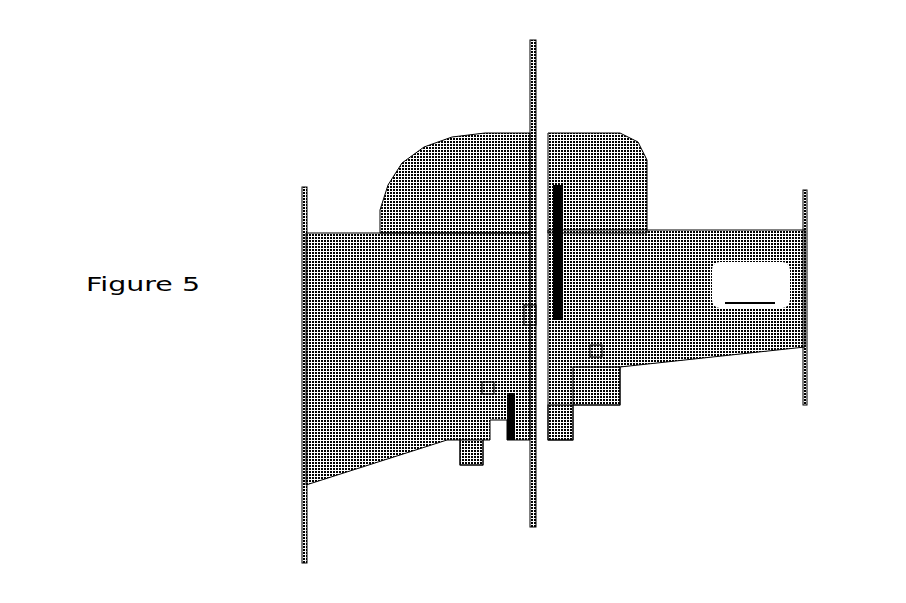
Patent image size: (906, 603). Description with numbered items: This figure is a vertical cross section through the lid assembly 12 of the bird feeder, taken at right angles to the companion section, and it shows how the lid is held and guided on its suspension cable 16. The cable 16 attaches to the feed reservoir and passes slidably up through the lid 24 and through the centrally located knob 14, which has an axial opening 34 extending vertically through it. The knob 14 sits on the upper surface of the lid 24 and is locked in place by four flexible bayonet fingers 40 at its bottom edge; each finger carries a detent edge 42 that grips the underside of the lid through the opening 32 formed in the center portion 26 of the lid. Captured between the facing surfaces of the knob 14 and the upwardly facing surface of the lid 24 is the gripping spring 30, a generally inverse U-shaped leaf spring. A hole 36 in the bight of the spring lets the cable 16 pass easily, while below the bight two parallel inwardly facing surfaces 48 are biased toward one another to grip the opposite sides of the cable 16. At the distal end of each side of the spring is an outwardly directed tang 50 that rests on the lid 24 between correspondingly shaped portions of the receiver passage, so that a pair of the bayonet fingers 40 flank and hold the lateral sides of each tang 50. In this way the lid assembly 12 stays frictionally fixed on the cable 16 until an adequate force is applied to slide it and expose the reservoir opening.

The lid assembly 12 is at (402, 120).
The knob 14 is at (642, 173).
The cable 16 is at (528, 75).
The lid 24 is at (750, 290).
The center portion 26 is at (492, 412).
The gripping spring 30 is at (522, 227).
The opening 32 is at (588, 375).
The axial opening 34 is at (553, 152).
The hole 36 is at (532, 185).
The bayonet fingers 40 is at (570, 425).
The detent edge 42 is at (462, 457).
The inwardly facing surfaces 48 is at (533, 317).
The tang 50 is at (600, 352).